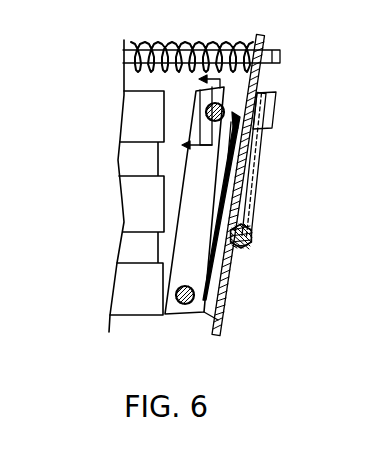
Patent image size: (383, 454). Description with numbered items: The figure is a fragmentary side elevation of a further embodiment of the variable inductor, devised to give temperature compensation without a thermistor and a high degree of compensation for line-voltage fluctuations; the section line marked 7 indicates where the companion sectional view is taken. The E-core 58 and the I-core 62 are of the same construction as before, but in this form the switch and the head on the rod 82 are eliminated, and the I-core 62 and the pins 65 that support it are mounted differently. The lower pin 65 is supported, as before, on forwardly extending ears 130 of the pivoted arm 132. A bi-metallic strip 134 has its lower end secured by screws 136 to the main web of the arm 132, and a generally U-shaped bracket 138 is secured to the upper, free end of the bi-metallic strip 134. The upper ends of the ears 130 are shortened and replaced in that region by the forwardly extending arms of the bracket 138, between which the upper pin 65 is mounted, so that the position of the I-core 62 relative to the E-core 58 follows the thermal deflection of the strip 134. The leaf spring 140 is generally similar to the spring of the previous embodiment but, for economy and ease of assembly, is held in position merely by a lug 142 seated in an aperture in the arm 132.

The E-core 58 is at (132, 192).
The rod 82 is at (168, 49).
The pins 65 is at (224, 107).
The ears 130 is at (226, 177).
The pivoted arm 132 is at (218, 319).
The bi-metallic strip 134 is at (250, 203).
The screws 136 is at (250, 246).
The U-shaped bracket 138 is at (275, 98).
The leaf spring 140 is at (215, 273).
The lug 142 is at (228, 210).
The I-core 62 is at (211, 216).
The section line 7- 7 is at (196, 109).